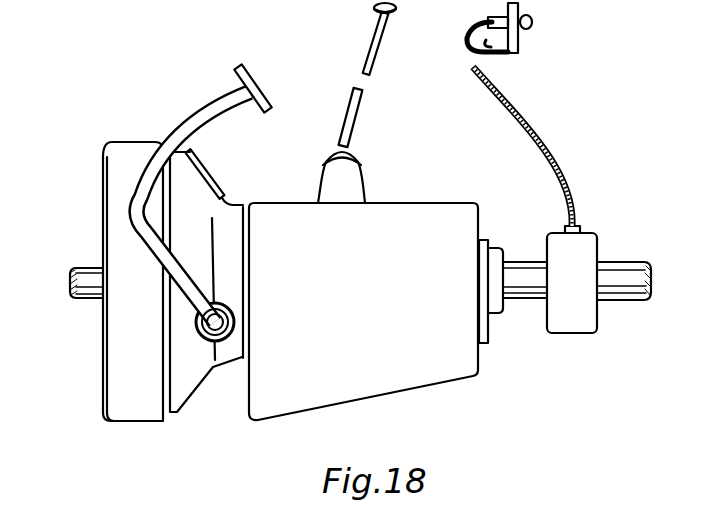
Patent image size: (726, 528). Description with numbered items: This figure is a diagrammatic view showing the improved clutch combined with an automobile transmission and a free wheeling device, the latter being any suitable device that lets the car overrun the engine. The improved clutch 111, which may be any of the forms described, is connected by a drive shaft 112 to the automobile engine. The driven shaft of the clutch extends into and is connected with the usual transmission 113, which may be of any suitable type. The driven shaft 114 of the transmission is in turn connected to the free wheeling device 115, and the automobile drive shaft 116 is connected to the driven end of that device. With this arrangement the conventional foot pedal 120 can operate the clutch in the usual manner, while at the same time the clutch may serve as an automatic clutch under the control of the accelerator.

The improved clutch 111 is at (122, 357).
The drive shaft 112 is at (88, 298).
The transmission 113 is at (382, 212).
The driven shaft of the transmission 114 is at (525, 266).
The free wheeling device 115 is at (567, 307).
The automobile drive shaft 116 is at (613, 277).
The foot pedal 120 is at (249, 82).